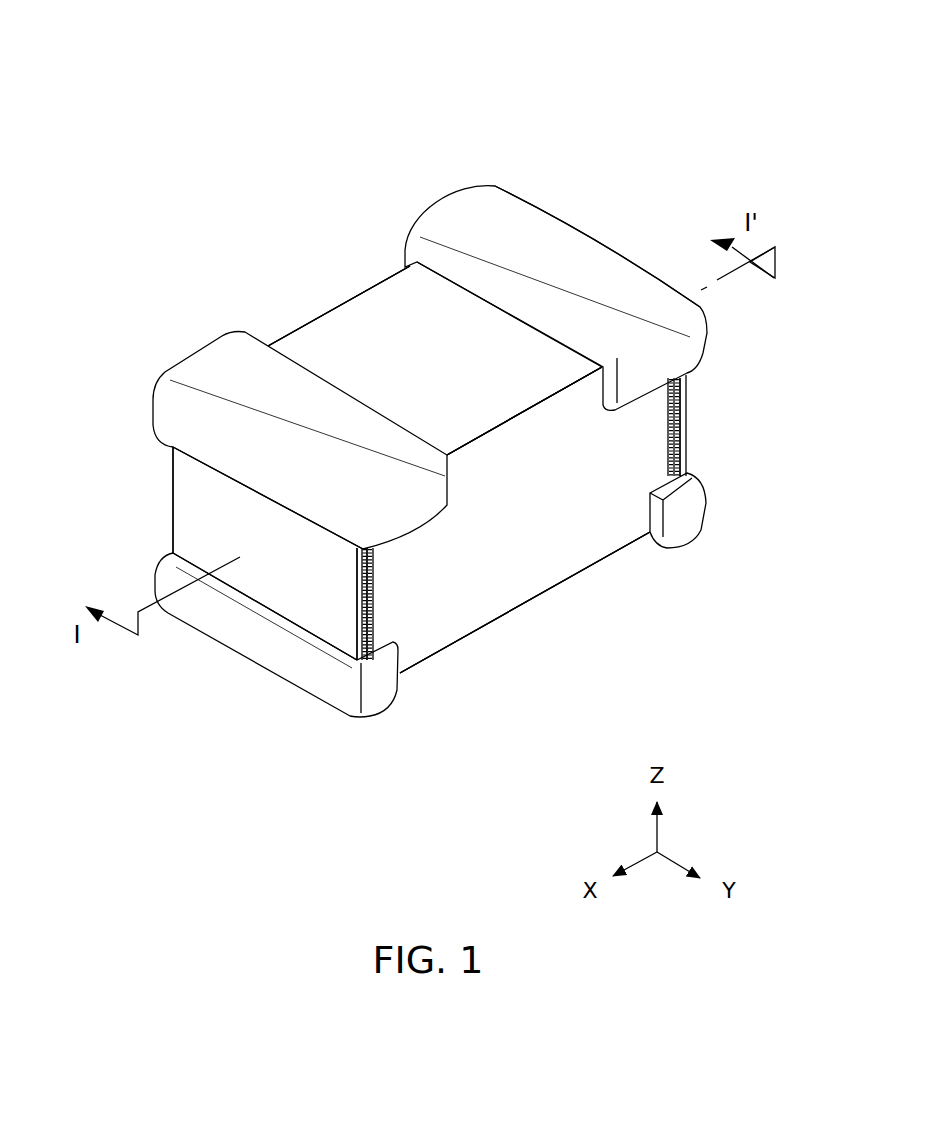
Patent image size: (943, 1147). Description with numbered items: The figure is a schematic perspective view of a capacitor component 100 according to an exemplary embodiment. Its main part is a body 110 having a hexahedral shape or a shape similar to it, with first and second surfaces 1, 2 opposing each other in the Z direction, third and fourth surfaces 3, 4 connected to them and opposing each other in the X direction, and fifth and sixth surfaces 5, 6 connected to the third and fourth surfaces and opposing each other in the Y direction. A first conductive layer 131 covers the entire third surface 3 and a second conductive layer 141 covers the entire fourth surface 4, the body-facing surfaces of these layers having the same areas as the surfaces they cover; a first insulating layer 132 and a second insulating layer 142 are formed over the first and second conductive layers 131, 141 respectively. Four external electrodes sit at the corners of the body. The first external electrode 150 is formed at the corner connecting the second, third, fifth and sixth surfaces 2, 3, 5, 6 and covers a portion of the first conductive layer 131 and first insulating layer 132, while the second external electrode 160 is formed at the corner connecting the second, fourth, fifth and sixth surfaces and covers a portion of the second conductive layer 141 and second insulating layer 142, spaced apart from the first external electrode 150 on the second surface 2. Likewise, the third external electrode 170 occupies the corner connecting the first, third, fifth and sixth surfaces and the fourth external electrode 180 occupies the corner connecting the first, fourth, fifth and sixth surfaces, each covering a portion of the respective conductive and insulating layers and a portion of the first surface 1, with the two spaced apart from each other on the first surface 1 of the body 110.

The capacitor component 100 is at (378, 36).
The body 110 is at (336, 302).
The first surface 1 is at (448, 594).
The second surface 2 is at (398, 306).
The third surface 3 is at (226, 522).
The fourth surface 4 is at (626, 287).
The fifth surface 5 is at (549, 528).
The sixth surface 6 is at (316, 354).
The first conductive layer 131 is at (377, 596).
The first insulating layer 132 is at (333, 612).
The second conductive layer 141 is at (688, 408).
The second insulating layer 142 is at (688, 456).
The first external electrode 150 is at (203, 354).
The second external electrode 160 is at (465, 194).
The third external electrode 170 is at (215, 638).
The fourth external electrode 180 is at (701, 539).